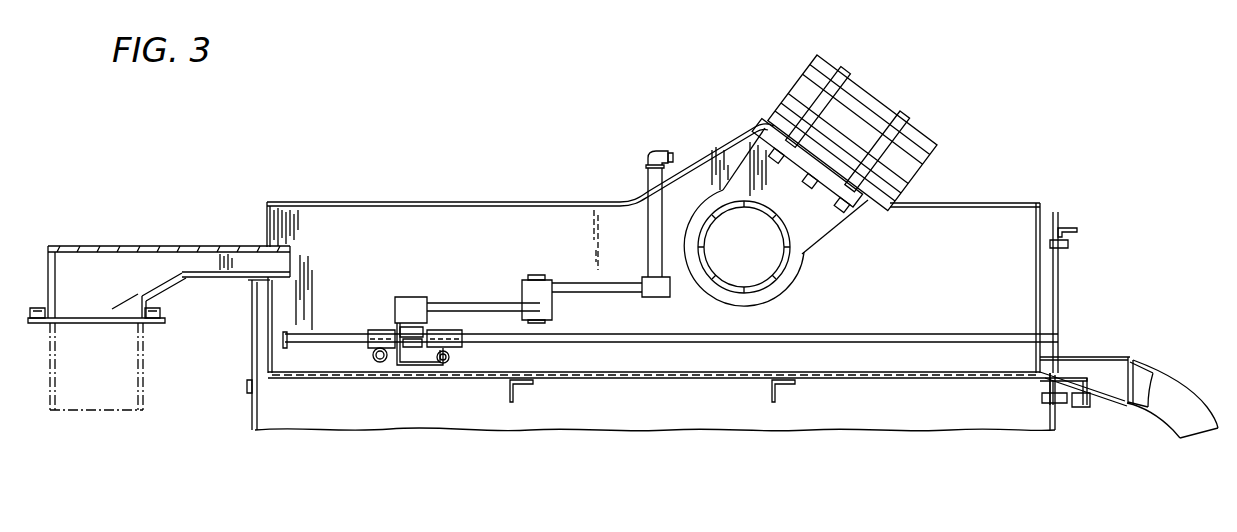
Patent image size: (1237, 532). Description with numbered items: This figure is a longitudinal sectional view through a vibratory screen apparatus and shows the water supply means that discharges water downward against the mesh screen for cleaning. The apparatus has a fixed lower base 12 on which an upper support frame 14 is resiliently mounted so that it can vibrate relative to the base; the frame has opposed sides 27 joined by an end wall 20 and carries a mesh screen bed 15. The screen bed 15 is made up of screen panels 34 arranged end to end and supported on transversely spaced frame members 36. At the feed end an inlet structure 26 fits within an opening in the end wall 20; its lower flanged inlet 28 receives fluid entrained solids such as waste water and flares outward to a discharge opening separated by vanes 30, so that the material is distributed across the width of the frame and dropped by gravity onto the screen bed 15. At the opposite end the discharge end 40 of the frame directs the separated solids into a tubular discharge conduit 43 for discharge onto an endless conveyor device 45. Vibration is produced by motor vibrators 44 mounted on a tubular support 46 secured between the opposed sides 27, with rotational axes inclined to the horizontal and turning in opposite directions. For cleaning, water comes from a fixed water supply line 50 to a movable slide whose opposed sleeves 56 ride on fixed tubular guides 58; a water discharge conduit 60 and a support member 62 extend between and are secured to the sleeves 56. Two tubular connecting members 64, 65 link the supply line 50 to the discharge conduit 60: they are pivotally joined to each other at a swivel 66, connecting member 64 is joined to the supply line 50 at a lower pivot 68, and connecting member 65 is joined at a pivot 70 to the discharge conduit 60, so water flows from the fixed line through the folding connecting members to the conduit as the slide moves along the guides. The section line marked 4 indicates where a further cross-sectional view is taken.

The section line 4- 4 is at (413, 153).
The lower base 12 is at (296, 431).
The upper support frame 14 is at (985, 201).
The mesh screen bed 15 is at (607, 382).
The end wall 20 is at (268, 335).
The inlet structure 26 is at (112, 245).
The opposed sides 27 is at (963, 277).
The lower flanged inlet 28 is at (165, 321).
The vanes 30 is at (287, 260).
The screen panels 34 is at (497, 380).
The frame members 36 is at (515, 392).
The discharge end 40 is at (1074, 358).
The tubular discharge conduit 43 is at (1180, 388).
The motor vibrators 44 is at (877, 93).
The endless conveyor device 45 is at (828, 200).
The tubular support 46 is at (800, 258).
The fixed water supply line 50 is at (647, 172).
The sleeves 56 is at (380, 330).
The fixed tubular guides 58 is at (325, 333).
The water discharge conduit 60 is at (450, 362).
The support member 62 is at (380, 363).
The connecting member 64 is at (590, 294).
The connecting member 65 is at (462, 303).
The swivel 66 is at (535, 275).
The lower pivot 68 is at (658, 297).
The pivot 70 is at (410, 297).